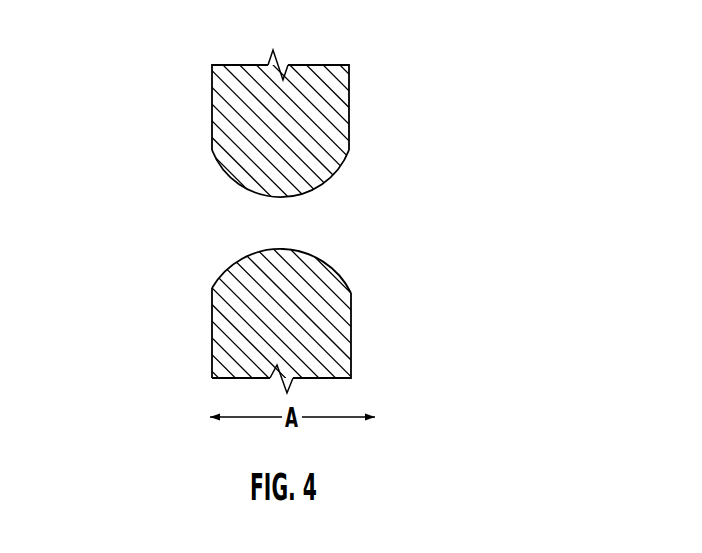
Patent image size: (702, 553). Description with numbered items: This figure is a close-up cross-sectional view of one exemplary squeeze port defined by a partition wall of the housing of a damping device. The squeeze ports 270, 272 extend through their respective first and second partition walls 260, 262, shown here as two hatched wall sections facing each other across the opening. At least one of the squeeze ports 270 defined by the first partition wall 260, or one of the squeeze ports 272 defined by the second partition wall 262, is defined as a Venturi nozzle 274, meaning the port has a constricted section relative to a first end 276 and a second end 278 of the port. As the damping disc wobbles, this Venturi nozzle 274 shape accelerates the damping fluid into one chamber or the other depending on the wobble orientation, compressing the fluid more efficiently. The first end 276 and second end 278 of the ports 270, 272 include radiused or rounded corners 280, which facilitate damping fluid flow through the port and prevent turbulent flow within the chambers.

The first partition wall 260 is at (351, 276).
The second partition wall 262 is at (328, 85).
The squeeze port 270 is at (351, 276).
The squeeze port 272 is at (413, 220).
The Venturi nozzle 274 is at (278, 252).
The first end 276 is at (190, 207).
The second end 278 is at (353, 233).
The rounded corners 280 is at (337, 187).